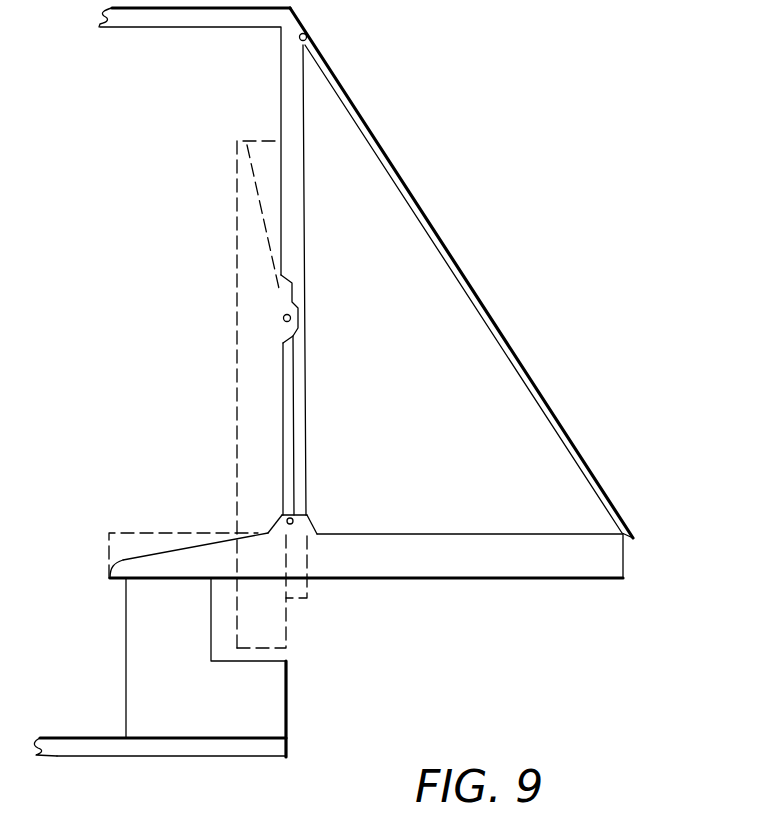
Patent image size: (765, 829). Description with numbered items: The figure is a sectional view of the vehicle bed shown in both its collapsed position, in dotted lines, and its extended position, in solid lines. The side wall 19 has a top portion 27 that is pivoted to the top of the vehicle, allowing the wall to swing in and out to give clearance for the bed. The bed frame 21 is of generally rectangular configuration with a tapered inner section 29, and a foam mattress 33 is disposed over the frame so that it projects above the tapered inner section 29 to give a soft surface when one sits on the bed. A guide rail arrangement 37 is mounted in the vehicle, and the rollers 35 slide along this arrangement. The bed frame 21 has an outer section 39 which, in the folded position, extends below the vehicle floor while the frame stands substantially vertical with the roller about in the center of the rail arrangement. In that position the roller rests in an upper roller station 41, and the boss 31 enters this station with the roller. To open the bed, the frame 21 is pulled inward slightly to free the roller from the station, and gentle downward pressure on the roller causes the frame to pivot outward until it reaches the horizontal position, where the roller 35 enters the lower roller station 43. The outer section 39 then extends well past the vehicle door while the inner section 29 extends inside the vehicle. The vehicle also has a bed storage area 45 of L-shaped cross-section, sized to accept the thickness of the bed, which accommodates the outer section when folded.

The side wall 19 is at (375, 147).
The bed frame 21 is at (246, 322).
The top portion 27 is at (310, 38).
The tapered inner section 29 is at (110, 572).
The boss 31 is at (315, 532).
The foam mattress 33 is at (110, 543).
The rollers 35 is at (297, 518).
The guide rail arrangement 37 is at (300, 385).
The outer section 39 is at (610, 565).
The upper roller station 41 is at (283, 293).
The lower roller station 43 is at (278, 528).
The bed storage area 45 is at (273, 650).